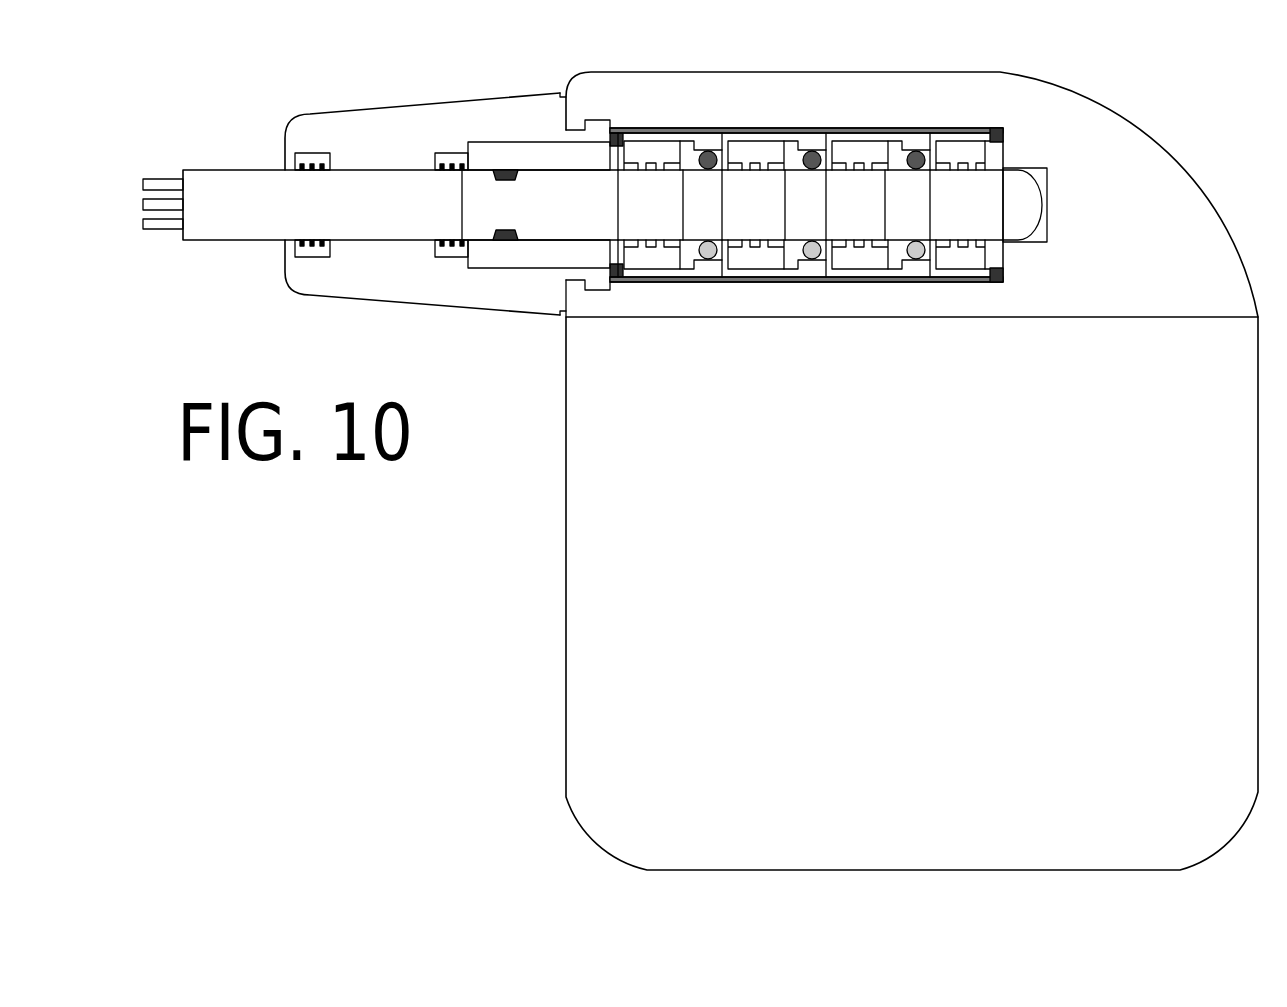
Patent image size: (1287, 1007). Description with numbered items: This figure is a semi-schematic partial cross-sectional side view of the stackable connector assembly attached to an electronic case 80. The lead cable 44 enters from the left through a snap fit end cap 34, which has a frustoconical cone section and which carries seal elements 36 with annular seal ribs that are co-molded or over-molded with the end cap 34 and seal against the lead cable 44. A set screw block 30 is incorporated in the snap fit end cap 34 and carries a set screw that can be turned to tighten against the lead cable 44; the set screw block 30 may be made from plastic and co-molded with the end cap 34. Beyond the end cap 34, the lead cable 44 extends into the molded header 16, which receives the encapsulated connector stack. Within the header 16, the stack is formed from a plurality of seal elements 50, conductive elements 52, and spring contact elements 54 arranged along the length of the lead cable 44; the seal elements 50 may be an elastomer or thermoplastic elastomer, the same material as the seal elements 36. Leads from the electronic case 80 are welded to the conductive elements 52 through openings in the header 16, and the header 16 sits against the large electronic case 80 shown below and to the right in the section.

The molded header 16 is at (715, 102).
The set screw block 30 is at (530, 157).
The snap fit end cap 34 is at (402, 110).
The seal elements 36 is at (303, 250).
The lead cable 44 is at (227, 203).
The seal elements 50 is at (960, 150).
The conductive elements 52 is at (823, 143).
The spring contact elements 54 is at (702, 155).
The electronic case 80 is at (625, 565).